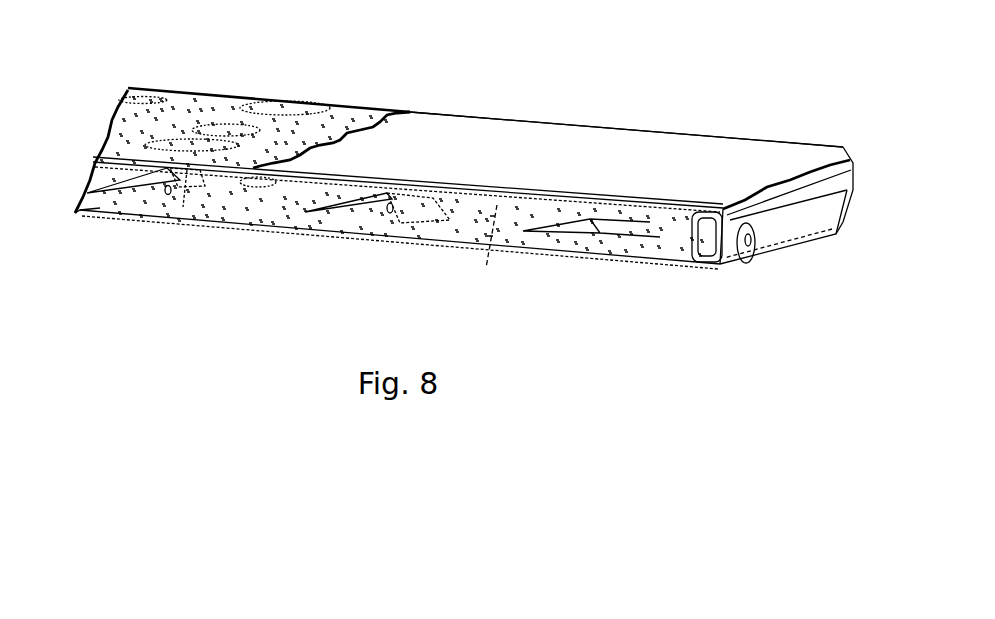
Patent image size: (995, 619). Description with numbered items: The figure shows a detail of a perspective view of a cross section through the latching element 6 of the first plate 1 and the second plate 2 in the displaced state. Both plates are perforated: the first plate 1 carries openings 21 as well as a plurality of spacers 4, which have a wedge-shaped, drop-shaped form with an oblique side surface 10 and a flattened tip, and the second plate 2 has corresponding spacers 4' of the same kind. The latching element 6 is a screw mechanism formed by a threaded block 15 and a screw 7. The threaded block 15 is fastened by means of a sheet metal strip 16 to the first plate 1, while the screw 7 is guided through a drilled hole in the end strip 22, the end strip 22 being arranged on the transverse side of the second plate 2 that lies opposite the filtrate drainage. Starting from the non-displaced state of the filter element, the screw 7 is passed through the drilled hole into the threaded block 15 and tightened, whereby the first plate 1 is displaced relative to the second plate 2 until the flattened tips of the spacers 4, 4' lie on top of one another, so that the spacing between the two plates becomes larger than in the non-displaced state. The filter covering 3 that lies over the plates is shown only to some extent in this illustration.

The first plate 1 is at (172, 224).
The second plate 2 is at (128, 133).
The filter covering 3 is at (602, 182).
The spacers 4 is at (65, 229).
The spacers of the second plate 4' is at (165, 232).
The latching element 6 is at (717, 276).
The screw 7 is at (744, 262).
The oblique side surface 10 is at (348, 202).
The threaded block 15 is at (687, 233).
The sheet metal strip 16 is at (478, 259).
The openings 21 is at (243, 100).
The end strip 22 is at (788, 212).